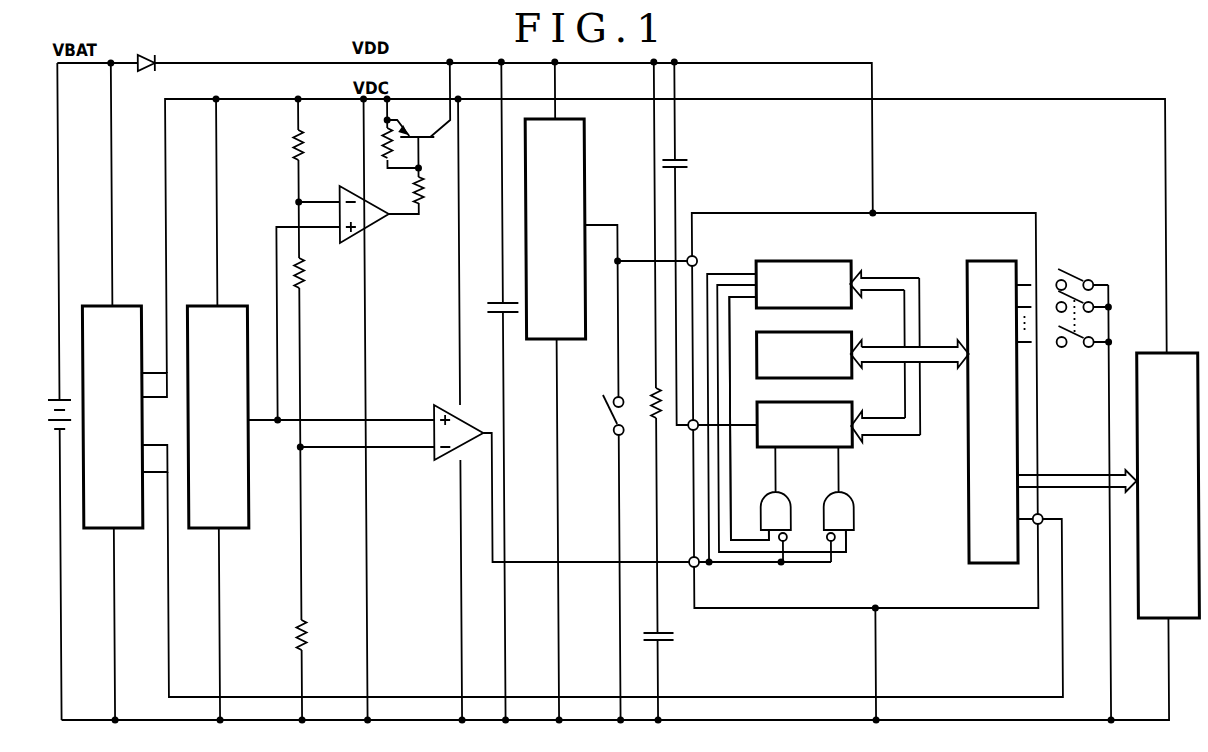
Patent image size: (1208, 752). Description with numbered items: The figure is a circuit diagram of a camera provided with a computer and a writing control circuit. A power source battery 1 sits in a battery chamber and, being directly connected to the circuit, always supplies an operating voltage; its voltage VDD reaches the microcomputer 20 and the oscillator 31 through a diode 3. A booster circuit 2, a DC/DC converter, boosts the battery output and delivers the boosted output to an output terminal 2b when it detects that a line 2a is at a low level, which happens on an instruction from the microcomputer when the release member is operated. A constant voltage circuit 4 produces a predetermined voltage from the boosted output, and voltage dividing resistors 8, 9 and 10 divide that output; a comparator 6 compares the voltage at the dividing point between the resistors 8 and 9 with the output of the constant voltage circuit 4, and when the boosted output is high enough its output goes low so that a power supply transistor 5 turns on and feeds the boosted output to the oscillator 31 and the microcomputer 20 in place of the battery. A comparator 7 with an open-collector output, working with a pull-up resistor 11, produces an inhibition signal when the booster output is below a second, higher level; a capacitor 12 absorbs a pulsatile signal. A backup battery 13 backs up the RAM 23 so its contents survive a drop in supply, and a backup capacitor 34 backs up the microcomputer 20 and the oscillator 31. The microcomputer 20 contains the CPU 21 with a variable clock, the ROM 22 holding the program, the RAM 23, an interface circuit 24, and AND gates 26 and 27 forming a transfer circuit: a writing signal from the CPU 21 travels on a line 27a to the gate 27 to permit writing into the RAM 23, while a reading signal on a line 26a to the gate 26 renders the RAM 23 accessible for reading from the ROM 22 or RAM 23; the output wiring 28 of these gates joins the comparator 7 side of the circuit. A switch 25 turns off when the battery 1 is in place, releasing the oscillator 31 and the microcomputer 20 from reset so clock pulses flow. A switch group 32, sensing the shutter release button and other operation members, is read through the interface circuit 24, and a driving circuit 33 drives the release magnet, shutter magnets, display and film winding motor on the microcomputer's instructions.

The power source battery 1 is at (75, 397).
The booster circuit 2 is at (130, 305).
The line 2a is at (154, 458).
The output terminal 2b is at (154, 385).
The diode 3 is at (147, 54).
The constant voltage circuit 4 is at (237, 305).
The power supply transistor 5 is at (425, 142).
The comparator 6 is at (372, 228).
The comparator 7 is at (466, 415).
The voltage dividing resistor 8 is at (306, 150).
The voltage dividing resistor 9 is at (306, 273).
The voltage dividing resistor 10 is at (306, 638).
The pull-up resistor 11 is at (652, 399).
The capacitor 12 is at (674, 636).
The backup battery 13 is at (691, 163).
The microcomputer 20 is at (995, 212).
The CPU 21 is at (818, 261).
The ROM 22 is at (852, 336).
The RAM 23 is at (852, 406).
The interface circuit 24 is at (997, 261).
The switch 25 is at (612, 424).
The AND gate 26 is at (856, 510).
The line 26a is at (844, 556).
The AND gate 27 is at (791, 499).
The line 27a is at (731, 493).
The signal line 28 is at (806, 566).
The oscillator 31 is at (587, 130).
The switch group 32 is at (1068, 270).
The driving circuit 33 is at (1178, 353).
The backup capacitor 34 is at (492, 304).